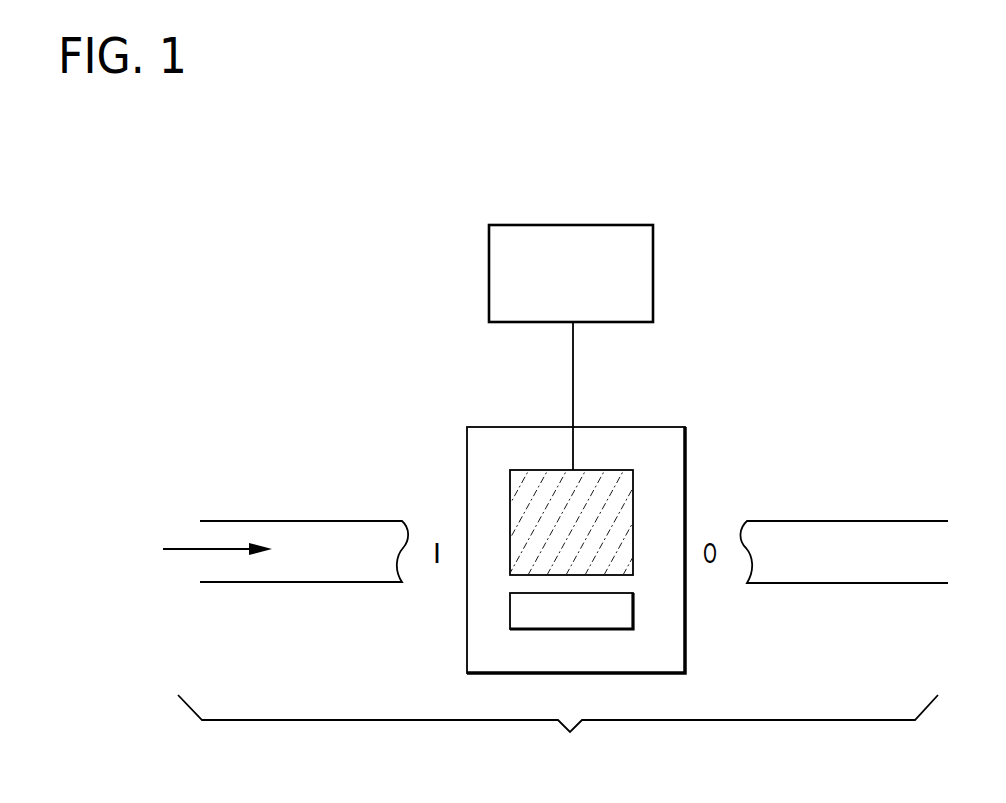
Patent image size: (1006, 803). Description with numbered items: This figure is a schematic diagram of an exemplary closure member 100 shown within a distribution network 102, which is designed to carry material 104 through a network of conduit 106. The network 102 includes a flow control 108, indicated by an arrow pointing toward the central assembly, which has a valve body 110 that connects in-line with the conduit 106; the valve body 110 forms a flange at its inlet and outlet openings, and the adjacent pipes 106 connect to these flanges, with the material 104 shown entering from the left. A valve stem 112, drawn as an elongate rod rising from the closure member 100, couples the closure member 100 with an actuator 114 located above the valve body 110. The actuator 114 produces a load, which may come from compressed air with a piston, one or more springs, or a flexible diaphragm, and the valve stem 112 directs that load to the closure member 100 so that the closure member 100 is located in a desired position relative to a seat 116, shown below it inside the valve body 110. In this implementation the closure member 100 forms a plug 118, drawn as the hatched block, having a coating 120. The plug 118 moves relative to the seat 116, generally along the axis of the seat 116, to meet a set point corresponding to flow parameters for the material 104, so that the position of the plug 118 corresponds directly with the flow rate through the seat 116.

The closure member 100 is at (484, 459).
The distribution network 102 is at (558, 729).
The material 104 is at (180, 549).
The conduit 106 is at (300, 521).
The flow control 108 is at (746, 330).
The valve body 110 is at (685, 498).
The valve stem 112 is at (573, 381).
The actuator 114 is at (591, 280).
The seat 116 is at (633, 617).
The plug 118 is at (633, 470).
The coating 120 is at (607, 510).